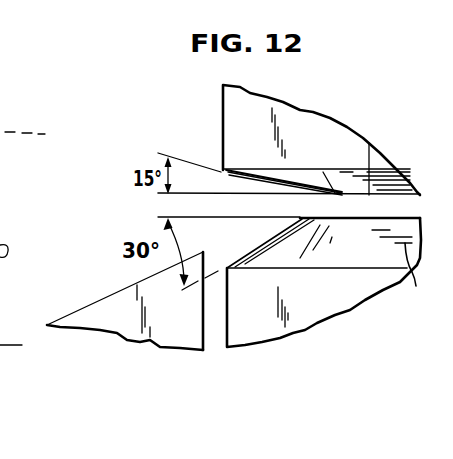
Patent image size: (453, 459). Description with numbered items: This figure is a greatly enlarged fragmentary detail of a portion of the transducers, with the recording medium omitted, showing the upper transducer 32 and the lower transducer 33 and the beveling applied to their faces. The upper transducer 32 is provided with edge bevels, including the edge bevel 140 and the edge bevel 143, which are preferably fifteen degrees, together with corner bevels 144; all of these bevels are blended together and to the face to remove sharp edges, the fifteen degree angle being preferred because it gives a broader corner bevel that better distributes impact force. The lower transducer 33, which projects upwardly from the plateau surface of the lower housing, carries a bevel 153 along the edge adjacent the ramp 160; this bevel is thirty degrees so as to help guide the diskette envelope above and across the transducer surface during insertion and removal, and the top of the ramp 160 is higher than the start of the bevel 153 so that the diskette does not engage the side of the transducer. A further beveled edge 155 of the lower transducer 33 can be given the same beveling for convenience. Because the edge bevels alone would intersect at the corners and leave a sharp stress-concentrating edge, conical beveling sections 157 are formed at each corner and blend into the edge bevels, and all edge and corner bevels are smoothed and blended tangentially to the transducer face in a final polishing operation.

The upper transducer 32 is at (310, 109).
The lower transducer 33 is at (330, 302).
The edge bevel 140 is at (247, 177).
The edge bevel 143 is at (378, 162).
The corner bevel 144 is at (299, 172).
The bevel 153 is at (268, 243).
The beveled edge 155 is at (412, 280).
The conical beveling section 157 is at (290, 268).
The ramp 160 is at (117, 298).